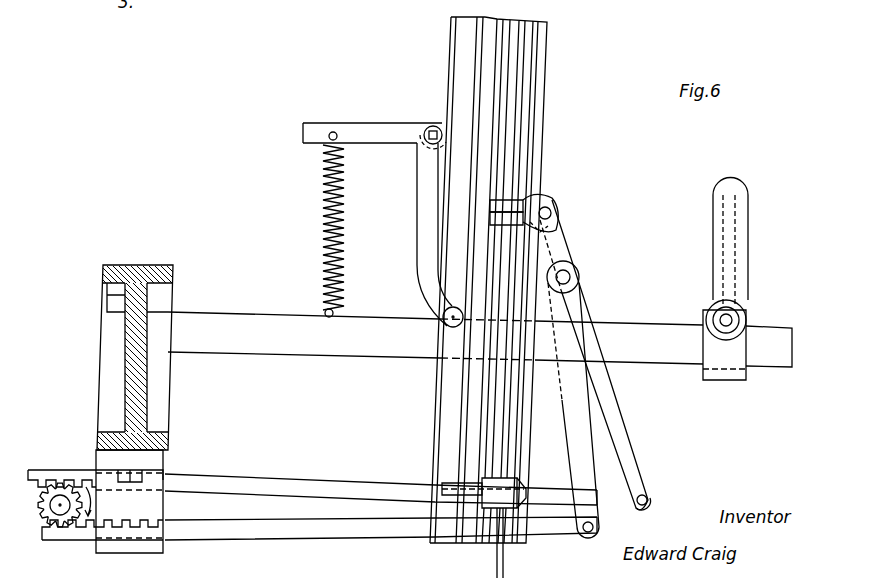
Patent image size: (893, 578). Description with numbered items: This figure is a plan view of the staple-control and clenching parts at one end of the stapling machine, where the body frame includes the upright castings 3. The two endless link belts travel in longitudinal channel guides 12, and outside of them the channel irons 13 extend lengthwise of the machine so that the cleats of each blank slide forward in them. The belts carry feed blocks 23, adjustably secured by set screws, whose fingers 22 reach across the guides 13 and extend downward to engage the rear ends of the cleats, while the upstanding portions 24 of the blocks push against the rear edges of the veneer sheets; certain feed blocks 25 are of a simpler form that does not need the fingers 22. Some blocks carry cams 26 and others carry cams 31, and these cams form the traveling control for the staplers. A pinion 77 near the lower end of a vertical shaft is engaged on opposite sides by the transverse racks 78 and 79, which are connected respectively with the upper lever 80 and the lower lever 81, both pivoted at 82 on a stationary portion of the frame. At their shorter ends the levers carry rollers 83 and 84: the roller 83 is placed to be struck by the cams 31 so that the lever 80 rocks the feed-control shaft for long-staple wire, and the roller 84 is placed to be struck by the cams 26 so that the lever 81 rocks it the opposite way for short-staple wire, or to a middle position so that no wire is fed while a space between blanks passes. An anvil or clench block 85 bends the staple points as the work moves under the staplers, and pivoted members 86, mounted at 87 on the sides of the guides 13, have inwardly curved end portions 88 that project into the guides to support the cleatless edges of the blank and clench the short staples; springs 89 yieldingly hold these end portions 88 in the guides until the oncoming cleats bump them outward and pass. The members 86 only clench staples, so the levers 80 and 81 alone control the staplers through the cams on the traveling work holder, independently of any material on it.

The castings 3 is at (167, 392).
The channel guides 12 is at (527, 130).
The channel irons 13 is at (449, 68).
The fingers 22 is at (470, 497).
The feed blocks 23 is at (504, 508).
The upstanding portions 24 is at (540, 198).
The feed blocks 25 is at (520, 200).
The cams 26 is at (528, 497).
The cams 31 is at (552, 228).
The pinion 77 is at (48, 488).
The rack 78 is at (347, 480).
The rack 79 is at (372, 530).
The upper lever 80 is at (580, 402).
The lower lever 81 is at (630, 450).
The pivot 82 is at (582, 278).
The roller 83 is at (552, 213).
The roller 84 is at (556, 202).
The anvil or clench block 85 is at (732, 321).
The pivoted members 86 is at (428, 216).
The pivot 87 is at (430, 128).
The end portions 88 is at (446, 326).
The springs 89 is at (322, 234).